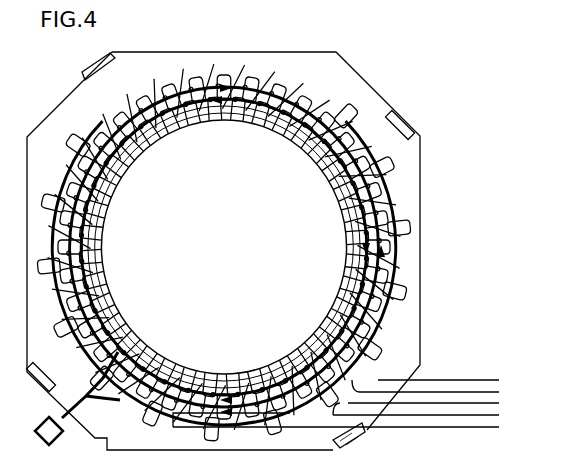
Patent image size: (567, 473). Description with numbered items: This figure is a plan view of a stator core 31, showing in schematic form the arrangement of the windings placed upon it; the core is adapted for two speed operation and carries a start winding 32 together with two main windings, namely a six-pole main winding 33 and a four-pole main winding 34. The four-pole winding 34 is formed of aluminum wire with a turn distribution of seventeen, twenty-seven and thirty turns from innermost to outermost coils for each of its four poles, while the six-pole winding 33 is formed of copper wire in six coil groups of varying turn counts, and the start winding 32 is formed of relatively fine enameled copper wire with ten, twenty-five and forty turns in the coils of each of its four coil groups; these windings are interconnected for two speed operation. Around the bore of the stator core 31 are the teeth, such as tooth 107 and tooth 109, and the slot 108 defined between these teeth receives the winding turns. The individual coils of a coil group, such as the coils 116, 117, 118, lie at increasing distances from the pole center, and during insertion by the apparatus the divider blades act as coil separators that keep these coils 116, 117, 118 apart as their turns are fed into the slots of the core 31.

The stator core 31 is at (354, 73).
The start winding 32 is at (224, 247).
The six-pole main winding 33 is at (224, 247).
The four-pole main winding 34 is at (224, 247).
The tooth 107 is at (224, 247).
The slot 108 is at (224, 247).
The tooth 109 is at (223, 247).
The coil 116 is at (224, 273).
The coil 117 is at (224, 258).
The coil 118 is at (224, 247).